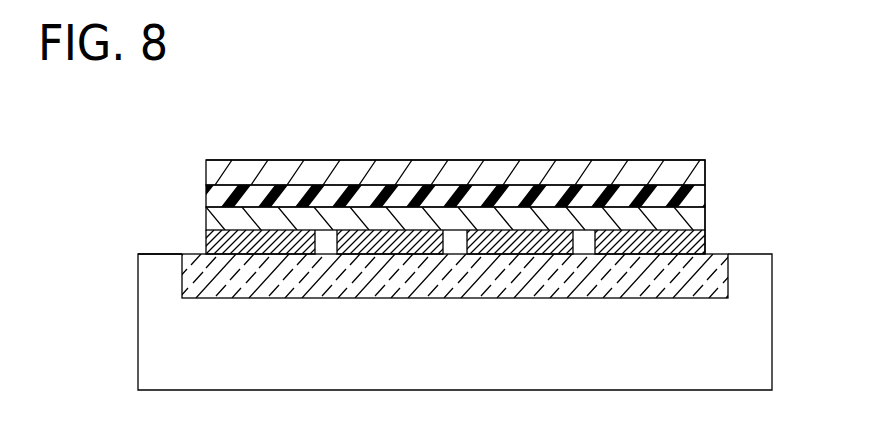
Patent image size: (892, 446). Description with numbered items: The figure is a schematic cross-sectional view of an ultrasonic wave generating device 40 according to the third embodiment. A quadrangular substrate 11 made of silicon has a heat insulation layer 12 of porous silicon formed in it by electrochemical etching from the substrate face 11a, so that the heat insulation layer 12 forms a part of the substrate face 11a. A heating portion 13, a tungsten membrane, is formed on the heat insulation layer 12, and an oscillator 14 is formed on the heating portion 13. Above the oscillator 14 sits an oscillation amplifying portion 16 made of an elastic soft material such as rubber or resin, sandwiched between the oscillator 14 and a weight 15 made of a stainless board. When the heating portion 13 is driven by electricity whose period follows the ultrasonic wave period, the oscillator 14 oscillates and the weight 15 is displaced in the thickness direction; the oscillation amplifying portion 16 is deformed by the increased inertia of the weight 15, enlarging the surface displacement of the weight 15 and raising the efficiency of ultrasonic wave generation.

The substrate 11 is at (750, 266).
The substrate face 11a is at (156, 253).
The heat insulation layer 12 is at (642, 270).
The heating portion 13 is at (358, 238).
The oscillator 14 is at (250, 218).
The weight 15 is at (529, 170).
The oscillation amplifying portion 16 is at (437, 197).
The ultrasonic wave generating device 40 is at (708, 156).